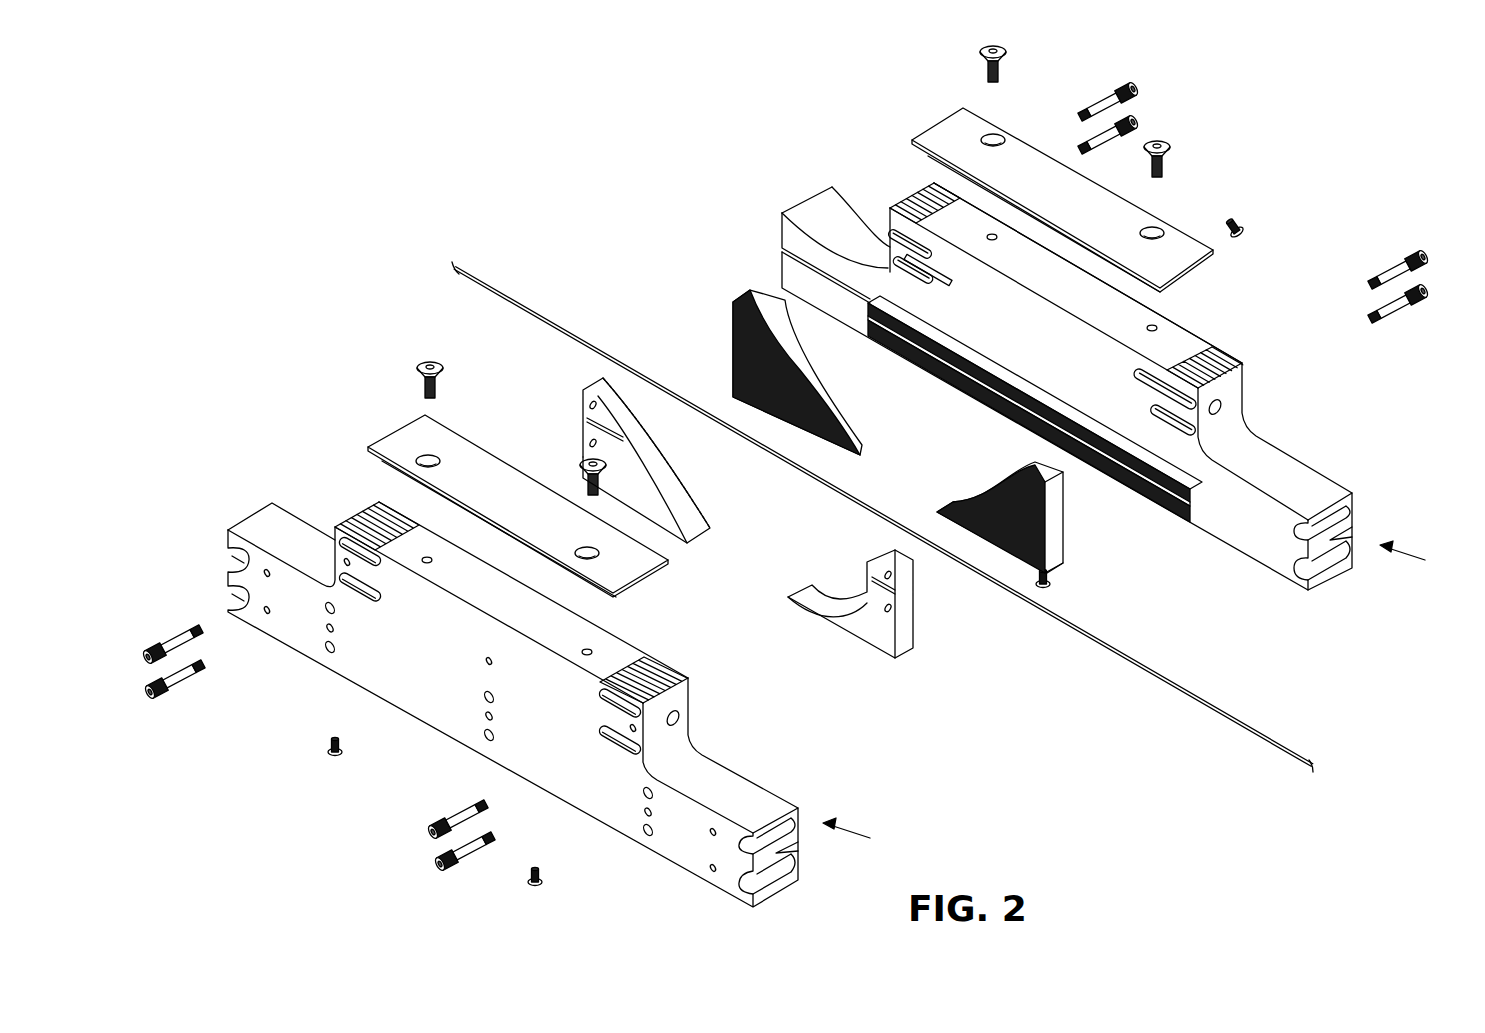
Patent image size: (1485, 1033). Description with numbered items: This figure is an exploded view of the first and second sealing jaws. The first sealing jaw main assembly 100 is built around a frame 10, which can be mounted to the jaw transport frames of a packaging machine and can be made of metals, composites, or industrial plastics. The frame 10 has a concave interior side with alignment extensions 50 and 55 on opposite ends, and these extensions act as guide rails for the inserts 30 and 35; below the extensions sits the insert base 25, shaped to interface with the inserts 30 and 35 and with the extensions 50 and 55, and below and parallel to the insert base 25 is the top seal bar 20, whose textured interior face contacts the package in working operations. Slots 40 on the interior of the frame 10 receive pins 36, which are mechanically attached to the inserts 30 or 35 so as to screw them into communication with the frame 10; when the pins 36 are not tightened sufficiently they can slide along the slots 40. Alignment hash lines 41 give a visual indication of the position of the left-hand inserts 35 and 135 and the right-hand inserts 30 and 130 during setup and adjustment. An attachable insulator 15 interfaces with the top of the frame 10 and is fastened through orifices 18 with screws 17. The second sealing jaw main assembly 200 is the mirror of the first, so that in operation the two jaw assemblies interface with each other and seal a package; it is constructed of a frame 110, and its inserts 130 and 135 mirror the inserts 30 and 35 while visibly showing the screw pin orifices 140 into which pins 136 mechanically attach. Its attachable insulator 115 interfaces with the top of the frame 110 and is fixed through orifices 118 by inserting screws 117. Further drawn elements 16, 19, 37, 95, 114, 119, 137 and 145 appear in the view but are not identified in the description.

The frame 10 is at (1300, 470).
The attachable insulator 15 is at (1074, 186).
The body upper surface 16 is at (1178, 323).
The screws 17 is at (1006, 52).
The orifices 18 is at (1163, 230).
The plate hole 19 is at (1000, 135).
The top seal bar 20 is at (1163, 518).
The insert base 25 is at (1195, 492).
The insert 30 is at (1065, 505).
The insert 35 is at (733, 345).
The pins 36 is at (1145, 121).
The set screw 37 is at (1052, 588).
The slots 40 is at (900, 238).
The alignment hash lines 41 is at (360, 512).
The alignment extension 50 is at (1223, 407).
The alignment extension 55 is at (784, 213).
The rod 95 is at (1198, 688).
The first sealing jaw main assembly 100 is at (1428, 555).
The frame 110 is at (732, 772).
The body upper surface 114 is at (600, 632).
The attachable insulator 115 is at (418, 420).
The screws 117 is at (428, 362).
The orifices 118 is at (600, 553).
The plate hole 119 is at (420, 462).
The insert 130 is at (880, 553).
The insert 135 is at (600, 382).
The pins 136 is at (148, 693).
The set screw 137 is at (527, 884).
The screw pin orifices 140 is at (362, 590).
The bracket holes 145 is at (589, 441).
The second sealing jaw main assembly 200 is at (870, 834).